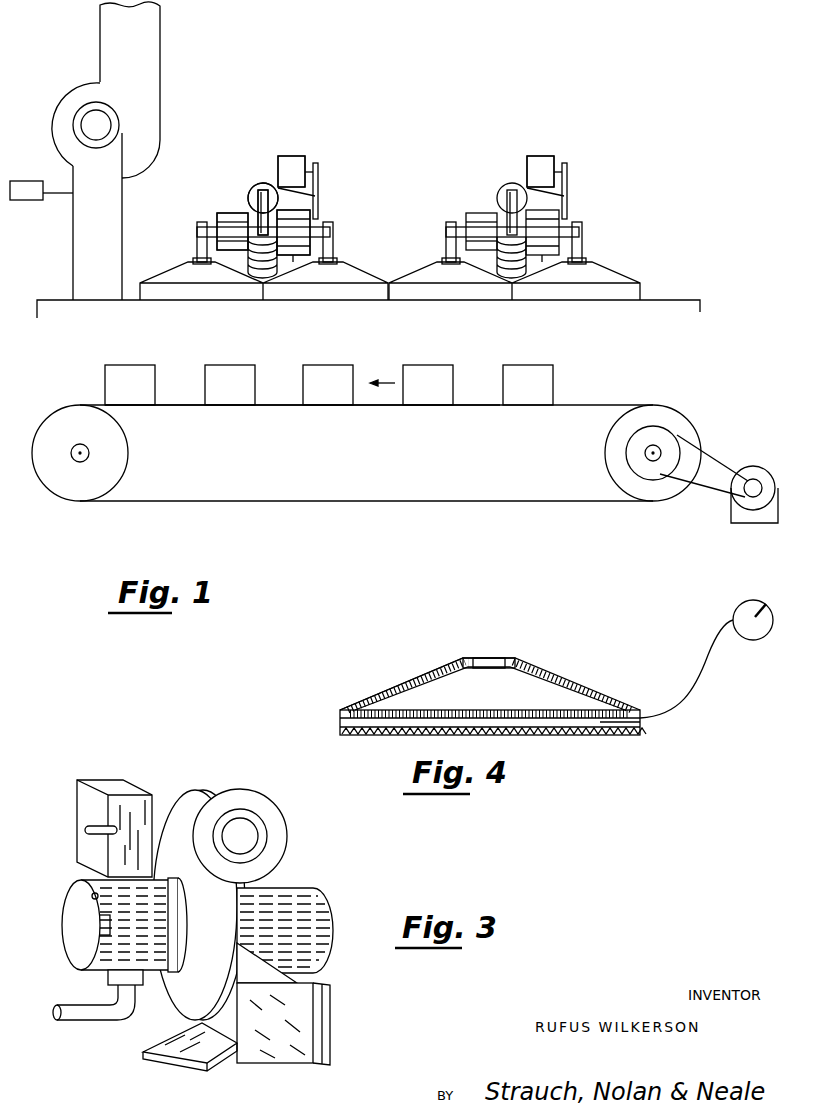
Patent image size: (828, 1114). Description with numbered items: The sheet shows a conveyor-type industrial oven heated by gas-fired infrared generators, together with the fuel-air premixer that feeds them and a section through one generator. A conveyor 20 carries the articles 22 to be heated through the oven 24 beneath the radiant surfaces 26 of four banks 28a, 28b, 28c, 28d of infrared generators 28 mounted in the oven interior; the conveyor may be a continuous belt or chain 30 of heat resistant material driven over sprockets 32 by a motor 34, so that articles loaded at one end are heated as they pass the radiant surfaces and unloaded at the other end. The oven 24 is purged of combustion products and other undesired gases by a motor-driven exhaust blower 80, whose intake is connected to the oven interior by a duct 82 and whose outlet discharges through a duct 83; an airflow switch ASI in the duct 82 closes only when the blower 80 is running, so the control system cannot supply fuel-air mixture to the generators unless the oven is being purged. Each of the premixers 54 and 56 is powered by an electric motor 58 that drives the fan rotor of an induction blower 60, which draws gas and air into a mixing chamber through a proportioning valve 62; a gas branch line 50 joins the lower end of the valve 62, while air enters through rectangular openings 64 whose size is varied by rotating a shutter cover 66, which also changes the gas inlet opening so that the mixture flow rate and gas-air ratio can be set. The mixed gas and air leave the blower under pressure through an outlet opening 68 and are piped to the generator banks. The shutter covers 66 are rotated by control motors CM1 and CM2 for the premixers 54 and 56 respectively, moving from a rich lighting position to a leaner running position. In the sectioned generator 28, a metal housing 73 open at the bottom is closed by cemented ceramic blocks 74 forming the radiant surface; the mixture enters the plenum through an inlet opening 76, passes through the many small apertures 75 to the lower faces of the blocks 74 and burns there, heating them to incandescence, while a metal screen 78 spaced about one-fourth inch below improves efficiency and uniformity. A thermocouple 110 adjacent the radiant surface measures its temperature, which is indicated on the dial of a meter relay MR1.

In FIG. 1, the conveyor 20 is at (615, 403).
In FIG. 1, the articles 22 is at (503, 365).
In FIG. 1, the oven 24 is at (165, 341).
In FIG. 1, the radiant surfaces 26 is at (202, 300).
In FIG. 4, the gas-fired infrared generators 28 is at (590, 677).
In FIG. 1, the bank of infrared generators 28a is at (255, 300).
In FIG. 1, the bank of infrared generators 28b is at (338, 300).
In FIG. 1, the bank of infrared generators 28c is at (442, 300).
In FIG. 1, the bank of infrared generators 28d is at (563, 300).
In FIG. 1, the continuous belt or chain 30 is at (268, 405).
In FIG. 1, the sprockets 32 is at (128, 453).
In FIG. 1, the motor 34 is at (757, 467).
In FIG. 3, the gas branch line 50 is at (85, 1022).
In FIG. 1, the fuel-air premixer 54 is at (290, 203).
In FIG. 3, the fuel-air premixer 54 is at (151, 1072).
In FIG. 1, the fuel-air premixer 56 is at (543, 203).
In FIG. 1, the electric motor 58 is at (218, 212).
In FIG. 3, the electric motor 58 is at (284, 888).
In FIG. 1, the induction blower 60 is at (257, 185).
In FIG. 3, the induction blower 60 is at (194, 782).
In FIG. 1, the proportioning valve 62 is at (312, 212).
In FIG. 3, the proportioning valve 62 is at (54, 932).
In FIG. 3, the rectangular openings 64 is at (94, 893).
In FIG. 3, the shutter cover 66 is at (70, 900).
In FIG. 3, the outlet opening 68 is at (242, 810).
In FIG. 4, the metal housing 73 is at (411, 686).
In FIG. 4, the ceramic blocks 74 is at (460, 710).
In FIG. 4, the perforations or apertures 75 is at (402, 722).
In FIG. 4, the inlet opening 76 is at (487, 657).
In FIG. 4, the metal screen 78 is at (572, 728).
In FIG. 1, the exhaust blower 80 is at (60, 112).
In FIG. 1, the duct 82 is at (78, 235).
In FIG. 1, the duct 83 is at (108, 18).
In FIG. 4, the thermocouple 110 is at (616, 726).
In FIG. 1, the control motor CM1 is at (297, 156).
In FIG. 3, the control motor CM1 is at (96, 780).
In FIG. 1, the control motor CM2 is at (546, 156).
In FIG. 4, the meter relay MR1 is at (706, 659).
In FIG. 1, the airflow switch ASI is at (41, 190).